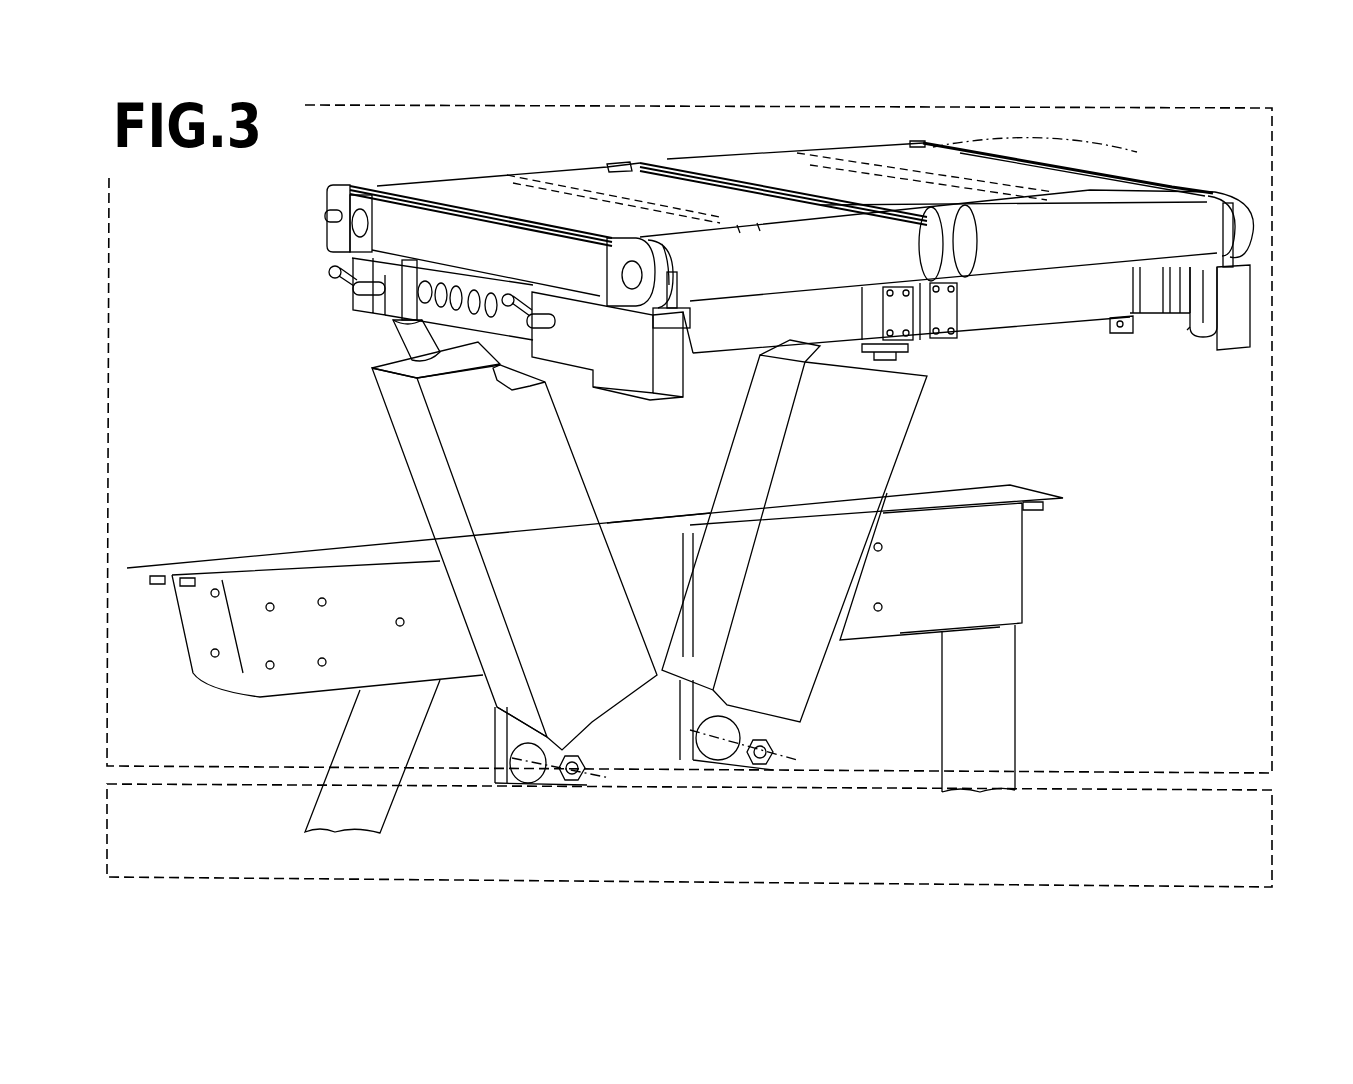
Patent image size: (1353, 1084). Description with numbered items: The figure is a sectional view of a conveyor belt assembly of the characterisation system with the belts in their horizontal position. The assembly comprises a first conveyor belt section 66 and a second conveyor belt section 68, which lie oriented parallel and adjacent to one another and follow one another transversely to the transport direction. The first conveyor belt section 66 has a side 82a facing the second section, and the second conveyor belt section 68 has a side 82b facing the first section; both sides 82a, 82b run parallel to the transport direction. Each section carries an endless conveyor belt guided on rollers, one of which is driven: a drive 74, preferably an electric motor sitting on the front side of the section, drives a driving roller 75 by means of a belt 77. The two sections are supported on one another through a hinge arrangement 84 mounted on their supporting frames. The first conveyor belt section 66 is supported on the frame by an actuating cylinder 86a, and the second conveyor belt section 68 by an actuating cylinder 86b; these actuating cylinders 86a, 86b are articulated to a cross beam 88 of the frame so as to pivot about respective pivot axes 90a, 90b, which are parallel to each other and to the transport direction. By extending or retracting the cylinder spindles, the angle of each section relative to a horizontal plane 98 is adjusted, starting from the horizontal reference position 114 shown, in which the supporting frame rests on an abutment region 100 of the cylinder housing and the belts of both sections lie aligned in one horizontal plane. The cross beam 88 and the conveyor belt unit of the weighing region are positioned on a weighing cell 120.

The first conveyor belt section 66 is at (488, 185).
The second conveyor belt section 68 is at (760, 168).
The drive 74 is at (655, 398).
The driving roller 75 is at (632, 278).
The belt 77 is at (688, 293).
The side of the first conveyor belt section 82a is at (787, 188).
The side of the second conveyor belt section 82b is at (812, 200).
The hinge arrangement 84 is at (932, 338).
The actuating cylinder 86a is at (553, 497).
The actuating cylinder 86b is at (866, 463).
The cross beam 88 is at (306, 560).
The pivot axis 90a is at (590, 777).
The pivot axis 90b is at (773, 770).
The horizontal plane 98 is at (1137, 152).
The abutment region 100 is at (440, 380).
The reference position 114 is at (1224, 190).
The weighing cell 120 is at (1226, 844).